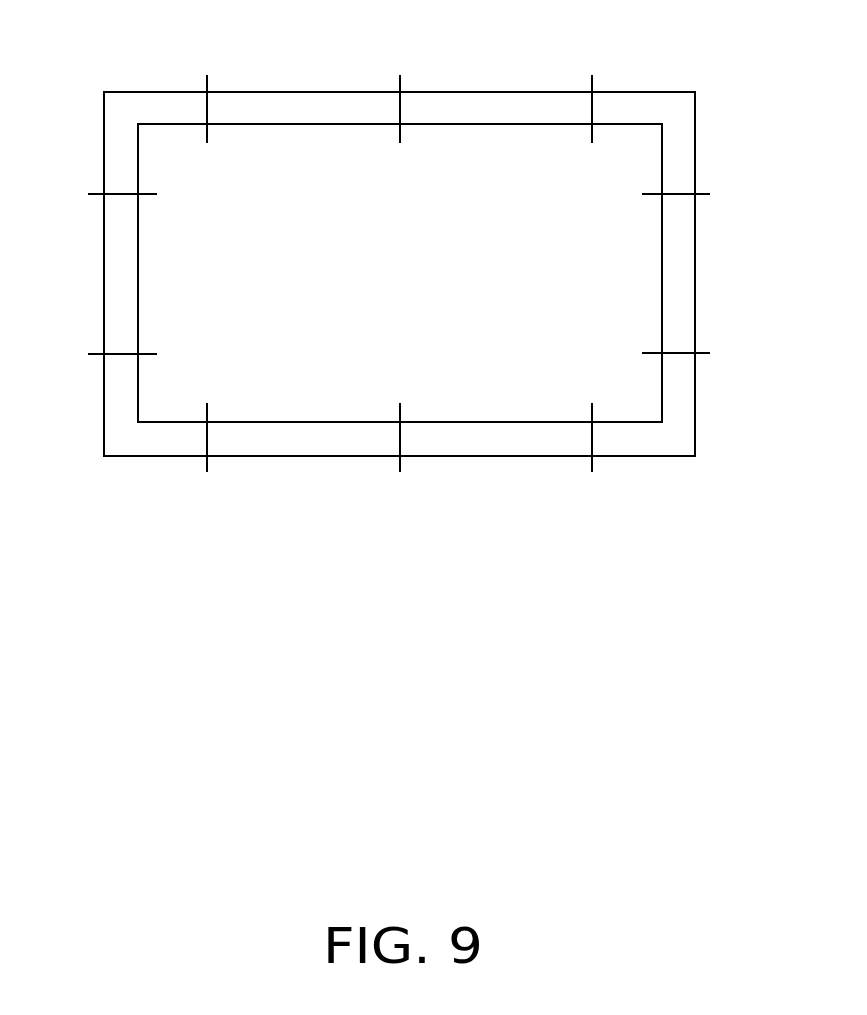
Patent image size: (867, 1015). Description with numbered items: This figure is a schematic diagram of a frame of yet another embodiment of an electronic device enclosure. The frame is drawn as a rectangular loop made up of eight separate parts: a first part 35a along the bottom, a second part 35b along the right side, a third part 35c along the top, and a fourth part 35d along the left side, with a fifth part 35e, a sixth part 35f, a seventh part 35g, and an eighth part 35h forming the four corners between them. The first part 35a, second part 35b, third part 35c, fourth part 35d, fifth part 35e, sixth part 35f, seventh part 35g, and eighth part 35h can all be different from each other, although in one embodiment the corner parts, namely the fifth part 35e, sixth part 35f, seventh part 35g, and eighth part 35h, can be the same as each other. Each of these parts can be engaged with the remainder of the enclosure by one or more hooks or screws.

The first part 35a is at (427, 444).
The second part 35b is at (676, 278).
The third part 35c is at (427, 101).
The fourth part 35d is at (117, 275).
The fifth part 35e is at (661, 441).
The sixth part 35f is at (660, 105).
The seventh part 35g is at (137, 106).
The eighth part 35h is at (137, 441).